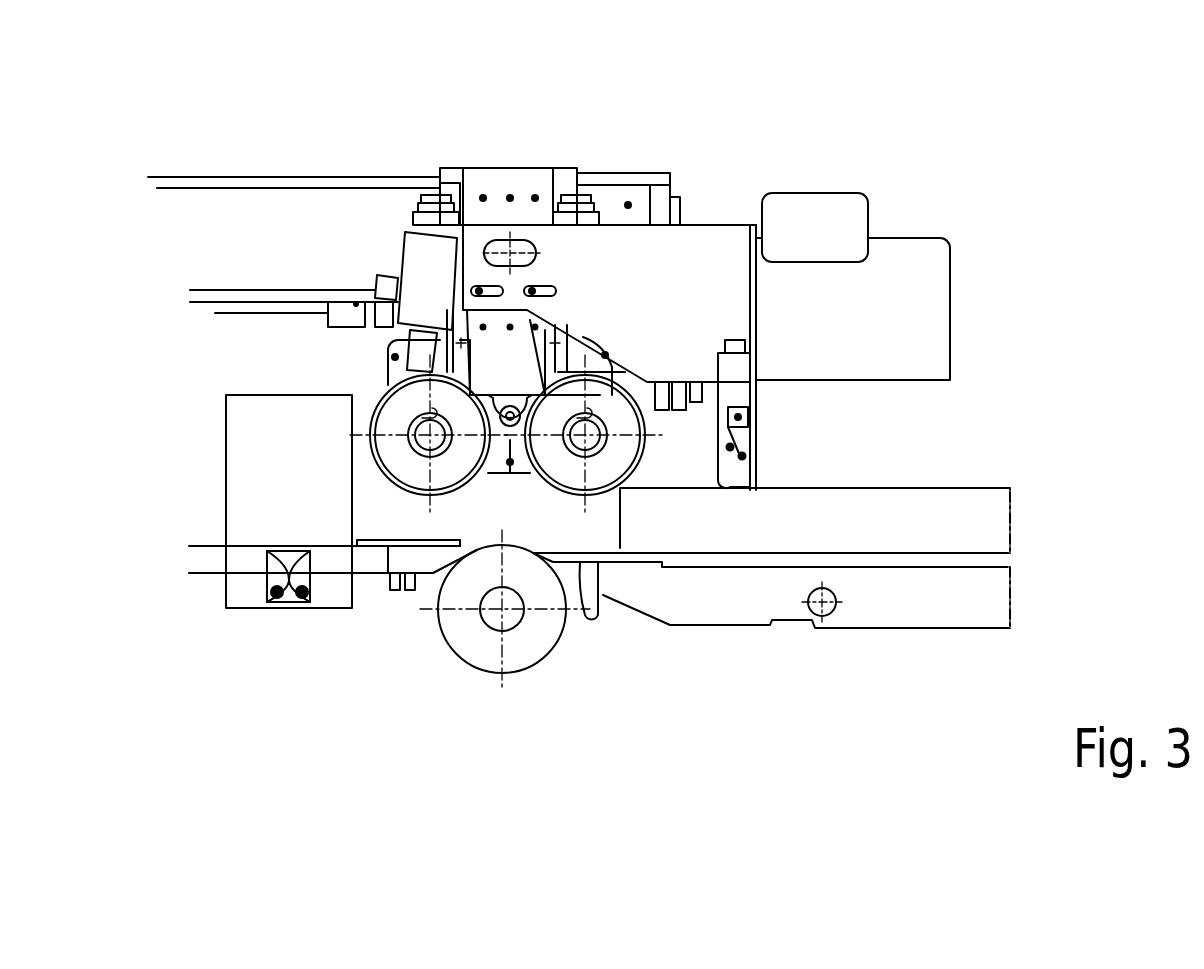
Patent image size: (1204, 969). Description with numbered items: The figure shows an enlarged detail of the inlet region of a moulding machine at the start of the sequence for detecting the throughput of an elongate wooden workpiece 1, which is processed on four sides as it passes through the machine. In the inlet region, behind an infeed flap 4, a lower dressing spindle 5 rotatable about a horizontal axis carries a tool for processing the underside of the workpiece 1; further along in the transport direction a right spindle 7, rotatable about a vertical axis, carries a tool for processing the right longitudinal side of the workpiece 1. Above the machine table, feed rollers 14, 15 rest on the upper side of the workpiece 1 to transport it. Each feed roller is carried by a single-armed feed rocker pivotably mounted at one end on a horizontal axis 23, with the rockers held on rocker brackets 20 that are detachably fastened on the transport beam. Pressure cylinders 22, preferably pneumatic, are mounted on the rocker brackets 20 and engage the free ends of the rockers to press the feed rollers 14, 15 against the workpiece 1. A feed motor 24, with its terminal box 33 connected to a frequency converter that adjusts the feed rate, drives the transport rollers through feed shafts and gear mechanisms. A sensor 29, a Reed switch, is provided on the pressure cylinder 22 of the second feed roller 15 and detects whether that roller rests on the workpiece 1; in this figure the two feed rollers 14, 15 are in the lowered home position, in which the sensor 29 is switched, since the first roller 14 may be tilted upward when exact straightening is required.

The workpiece 1 is at (948, 525).
The infeed flap 4 is at (737, 380).
The lower dressing spindle 5 is at (530, 650).
The right spindle 7 is at (254, 442).
The feed roller 14 is at (610, 398).
The feed roller 15 is at (397, 415).
The rocker bracket 20 is at (525, 190).
The pressure cylinder 22 is at (430, 290).
The horizontal axis 23 is at (512, 408).
The feed motor 24 is at (907, 293).
The sensor 29 is at (388, 282).
The terminal box 33 is at (818, 222).